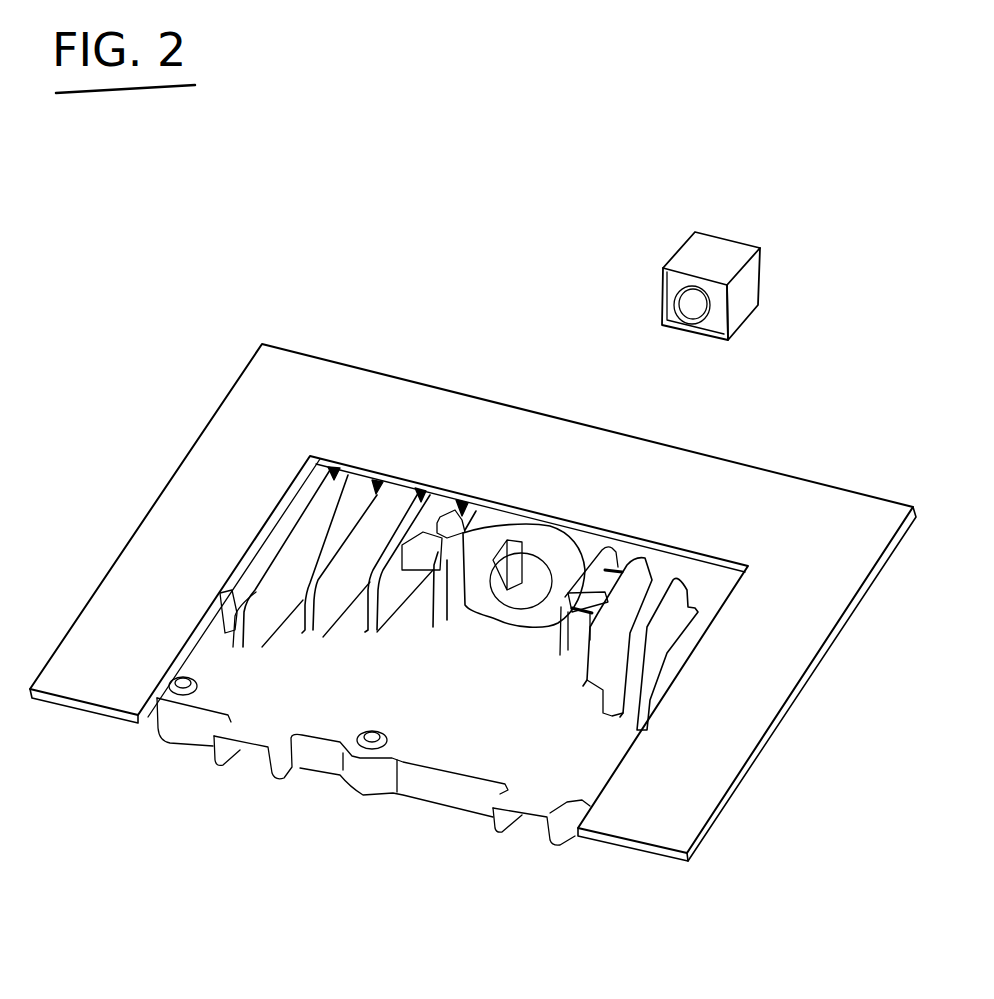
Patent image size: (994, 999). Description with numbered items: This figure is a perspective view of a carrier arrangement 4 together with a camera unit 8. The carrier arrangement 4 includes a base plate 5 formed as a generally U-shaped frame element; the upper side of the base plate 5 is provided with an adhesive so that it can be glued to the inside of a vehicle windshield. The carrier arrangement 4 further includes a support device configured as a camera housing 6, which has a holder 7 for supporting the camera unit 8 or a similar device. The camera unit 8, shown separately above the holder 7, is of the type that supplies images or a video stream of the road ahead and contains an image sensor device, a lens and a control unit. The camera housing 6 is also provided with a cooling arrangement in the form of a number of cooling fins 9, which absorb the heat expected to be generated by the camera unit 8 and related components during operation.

The carrier arrangement 4 is at (800, 434).
The base plate 5 is at (103, 698).
The camera housing 6 is at (257, 725).
The holder 7 is at (507, 618).
The camera unit 8 is at (723, 243).
The cooling fins 9 is at (298, 563).